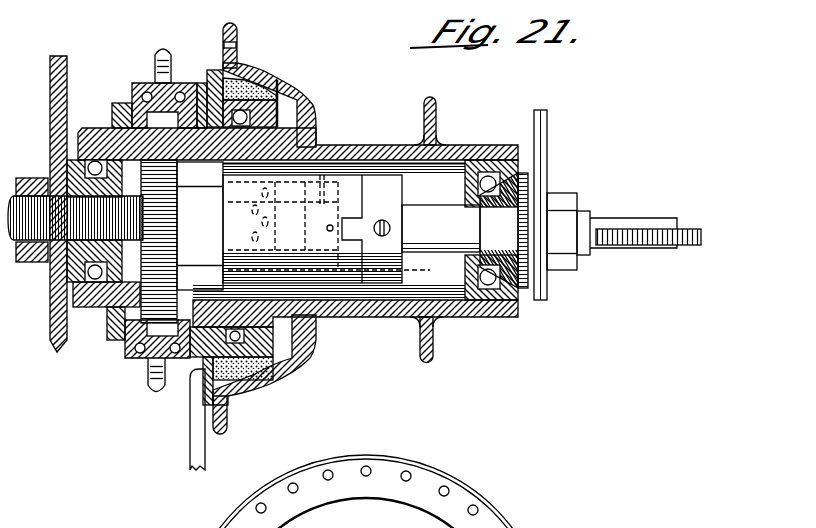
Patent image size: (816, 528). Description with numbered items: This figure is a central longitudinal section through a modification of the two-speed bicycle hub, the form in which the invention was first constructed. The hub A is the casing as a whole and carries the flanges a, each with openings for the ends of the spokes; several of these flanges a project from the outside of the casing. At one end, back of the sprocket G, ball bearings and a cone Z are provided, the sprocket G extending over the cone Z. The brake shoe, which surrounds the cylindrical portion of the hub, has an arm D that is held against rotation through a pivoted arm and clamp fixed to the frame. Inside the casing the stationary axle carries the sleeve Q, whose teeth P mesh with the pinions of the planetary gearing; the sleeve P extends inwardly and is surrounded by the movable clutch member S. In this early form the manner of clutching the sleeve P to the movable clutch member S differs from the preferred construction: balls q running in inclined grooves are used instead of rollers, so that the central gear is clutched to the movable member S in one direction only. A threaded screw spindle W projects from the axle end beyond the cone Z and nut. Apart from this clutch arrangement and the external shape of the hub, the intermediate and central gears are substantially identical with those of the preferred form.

The flanges a is at (234, 437).
The sprocket G is at (147, 85).
The cone Z is at (195, 84).
The hub A is at (308, 93).
The screw spindle W is at (683, 231).
The sleeve P is at (200, 226).
The balls q is at (329, 222).
The movable clutch member S is at (289, 276).
The sleeve Q is at (162, 253).
The arm D is at (193, 441).